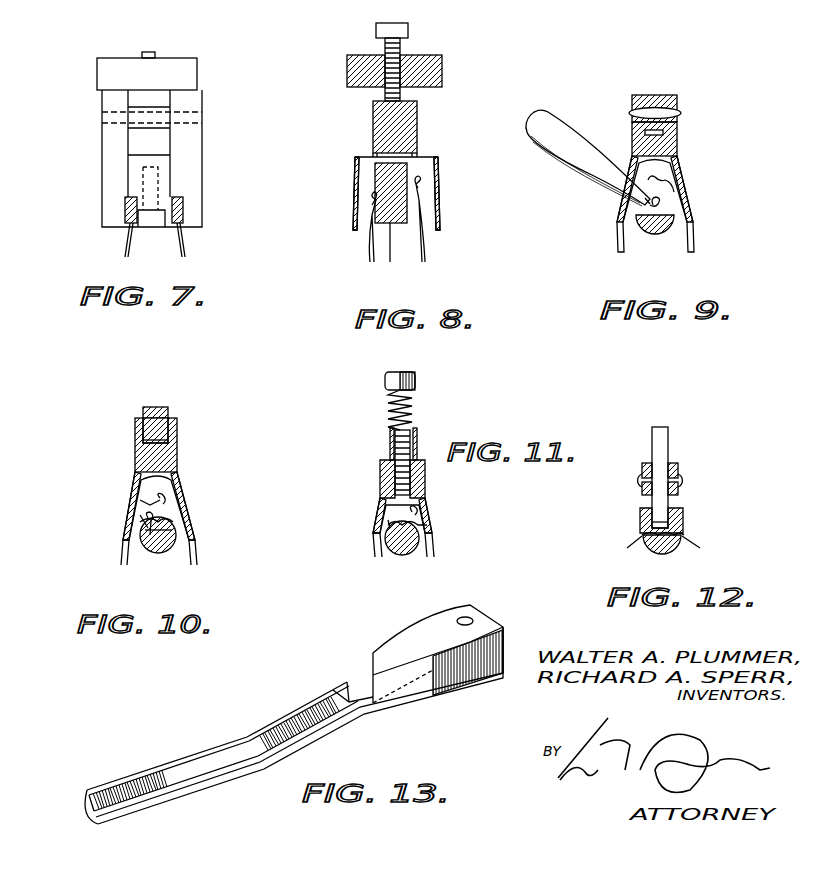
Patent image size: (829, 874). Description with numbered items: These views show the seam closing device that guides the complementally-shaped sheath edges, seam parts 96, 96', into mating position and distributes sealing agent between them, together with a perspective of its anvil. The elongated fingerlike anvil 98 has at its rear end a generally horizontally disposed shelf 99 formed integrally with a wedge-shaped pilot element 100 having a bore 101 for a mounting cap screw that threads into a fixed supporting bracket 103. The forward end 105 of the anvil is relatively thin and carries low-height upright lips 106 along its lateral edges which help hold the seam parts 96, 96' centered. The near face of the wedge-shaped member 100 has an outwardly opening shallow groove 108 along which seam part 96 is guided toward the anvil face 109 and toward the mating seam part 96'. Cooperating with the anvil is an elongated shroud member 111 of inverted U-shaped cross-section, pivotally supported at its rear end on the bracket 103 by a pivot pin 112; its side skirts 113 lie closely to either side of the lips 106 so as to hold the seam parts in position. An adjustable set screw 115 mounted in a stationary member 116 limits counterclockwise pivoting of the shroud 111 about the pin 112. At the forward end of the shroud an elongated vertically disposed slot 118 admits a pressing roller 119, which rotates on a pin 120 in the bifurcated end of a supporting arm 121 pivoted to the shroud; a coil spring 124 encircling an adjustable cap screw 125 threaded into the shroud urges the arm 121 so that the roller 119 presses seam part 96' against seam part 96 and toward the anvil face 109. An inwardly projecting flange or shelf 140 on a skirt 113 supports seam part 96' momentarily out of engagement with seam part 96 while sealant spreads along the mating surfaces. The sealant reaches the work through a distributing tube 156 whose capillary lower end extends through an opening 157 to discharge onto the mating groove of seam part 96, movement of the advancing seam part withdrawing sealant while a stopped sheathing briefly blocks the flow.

In FIG. 7, the seam part 96 is at (92, 227).
In FIG. 8, the seam part 96 is at (339, 221).
In FIG. 9, the seam part 96 is at (645, 238).
In FIG. 10, the seam part 96 is at (136, 553).
In FIG. 7, the mating seam part 96' is at (214, 227).
In FIG. 8, the mating seam part 96' is at (450, 219).
In FIG. 9, the mating seam part 96' is at (689, 177).
In FIG. 10, the mating seam part 96' is at (192, 485).
In FIG. 11, the mating seam part 96' is at (442, 506).
In FIG. 12, the mating seam part 96' is at (681, 534).
In FIG. 9, the anvil 98 is at (668, 234).
In FIG. 10, the anvil 98 is at (168, 554).
In FIG. 11, the anvil 98 is at (399, 553).
In FIG. 12, the anvil 98 is at (650, 556).
In FIG. 13, the anvil 98 is at (206, 737).
In FIG. 13, the shelf 99 is at (347, 693).
In FIG. 7, the wedge-shaped pilot element 100 is at (172, 175).
In FIG. 8, the wedge-shaped pilot element 100 is at (402, 168).
In FIG. 13, the wedge-shaped pilot element 100 is at (435, 618).
In FIG. 7, the bore 101 is at (158, 190).
In FIG. 13, the bore 101 is at (470, 613).
In FIG. 7, the fixed supporting bracket 103 is at (135, 142).
In FIG. 13, the forward end of anvil 105 is at (95, 810).
In FIG. 10, the upright lips 106 is at (167, 530).
In FIG. 13, the upright lips 106 is at (115, 780).
In FIG. 8, the shallow groove 108 is at (392, 257).
In FIG. 13, the shallow groove 108 is at (503, 658).
In FIG. 10, the anvil face 109 is at (173, 522).
In FIG. 11, the anvil face 109 is at (427, 525).
In FIG. 13, the anvil face 109 is at (157, 780).
In FIG. 7, the shroud member 111 is at (167, 107).
In FIG. 8, the shroud member 111 is at (438, 157).
In FIG. 9, the shroud member 111 is at (672, 140).
In FIG. 10, the shroud member 111 is at (138, 453).
In FIG. 11, the shroud member 111 is at (385, 483).
In FIG. 12, the shroud member 111 is at (683, 508).
In FIG. 7, the pivot pin 112 is at (202, 116).
In FIG. 9, the pivot pin 112 is at (677, 103).
In FIG. 8, the side skirts 113 is at (440, 222).
In FIG. 9, the side skirts 113 is at (695, 205).
In FIG. 10, the side skirts 113 is at (140, 500).
In FIG. 7, the adjustable set screw 115 is at (148, 52).
In FIG. 8, the adjustable set screw 115 is at (403, 27).
In FIG. 7, the stationary member 116 is at (185, 70).
In FIG. 12, the slot 118 is at (660, 510).
In FIG. 12, the pressing roller 119 is at (668, 433).
In FIG. 12, the pin 120 is at (685, 483).
In FIG. 10, the supporting arm 121 is at (157, 408).
In FIG. 11, the supporting arm 121 is at (392, 440).
In FIG. 12, the supporting arm 121 is at (678, 467).
In FIG. 11, the coil spring 124 is at (413, 395).
In FIG. 11, the adjustable cap screw 125 is at (415, 378).
In FIG. 10, the flange or shelf 140 is at (140, 522).
In FIG. 9, the distributing tube 156 is at (555, 125).
In FIG. 9, the opening 157 is at (622, 198).